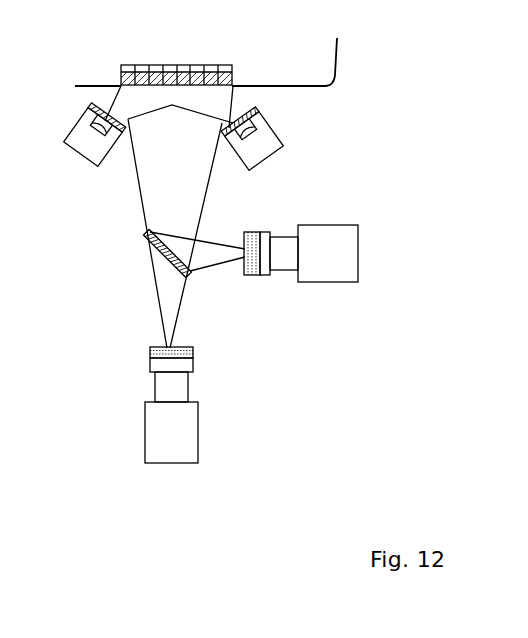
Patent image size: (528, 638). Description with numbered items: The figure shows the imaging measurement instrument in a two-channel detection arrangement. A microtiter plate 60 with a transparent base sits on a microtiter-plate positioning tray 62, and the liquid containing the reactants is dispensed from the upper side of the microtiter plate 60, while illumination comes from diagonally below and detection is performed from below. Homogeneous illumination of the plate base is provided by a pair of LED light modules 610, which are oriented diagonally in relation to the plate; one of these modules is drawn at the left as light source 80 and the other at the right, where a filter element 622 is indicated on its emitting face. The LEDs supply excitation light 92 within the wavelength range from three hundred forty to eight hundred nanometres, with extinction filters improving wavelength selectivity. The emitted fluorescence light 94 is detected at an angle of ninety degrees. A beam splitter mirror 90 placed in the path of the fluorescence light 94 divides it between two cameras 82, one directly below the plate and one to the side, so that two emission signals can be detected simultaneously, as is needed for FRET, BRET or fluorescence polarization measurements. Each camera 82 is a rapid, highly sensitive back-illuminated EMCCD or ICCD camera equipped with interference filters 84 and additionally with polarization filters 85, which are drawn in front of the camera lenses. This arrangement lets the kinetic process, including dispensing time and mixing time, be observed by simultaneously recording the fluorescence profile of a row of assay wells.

The microtiter plate 60 is at (157, 65).
The microtiter-plate positioning tray 62 is at (212, 53).
The excitation light 92 is at (208, 103).
The fluorescence light 94 is at (162, 180).
The light source (LED) 80 is at (75, 153).
The LED light module 610 is at (285, 157).
The filter 622 is at (268, 118).
The beam splitter mirror 90 is at (162, 255).
The polarization filter 85 is at (241, 145).
The interference filter 84 is at (263, 263).
The camera 82 is at (332, 252).